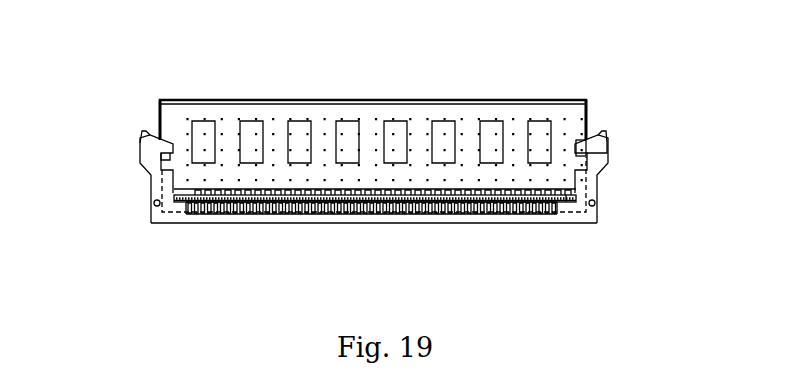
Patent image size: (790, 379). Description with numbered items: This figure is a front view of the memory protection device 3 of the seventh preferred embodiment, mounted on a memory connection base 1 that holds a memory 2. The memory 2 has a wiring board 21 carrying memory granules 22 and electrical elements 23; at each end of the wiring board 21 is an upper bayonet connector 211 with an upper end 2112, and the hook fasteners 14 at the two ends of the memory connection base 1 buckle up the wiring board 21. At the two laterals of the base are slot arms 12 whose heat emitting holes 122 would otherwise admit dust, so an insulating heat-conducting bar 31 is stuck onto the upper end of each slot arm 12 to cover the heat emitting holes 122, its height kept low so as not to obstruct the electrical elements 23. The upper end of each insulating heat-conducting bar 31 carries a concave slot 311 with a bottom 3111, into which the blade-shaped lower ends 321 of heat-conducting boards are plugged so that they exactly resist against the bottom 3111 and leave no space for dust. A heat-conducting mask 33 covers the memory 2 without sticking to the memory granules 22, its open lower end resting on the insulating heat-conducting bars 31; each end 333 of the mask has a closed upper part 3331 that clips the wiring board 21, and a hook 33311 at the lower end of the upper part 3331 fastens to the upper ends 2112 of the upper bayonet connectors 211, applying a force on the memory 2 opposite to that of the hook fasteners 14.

The memory connection base 1 is at (593, 218).
The slot arm 12 is at (561, 203).
The heat emitting hole 122 is at (572, 198).
The hook fastener 14 is at (607, 148).
The memory 2 is at (330, 117).
The wiring board 21 is at (183, 112).
The memory granules 22 is at (203, 128).
The electrical elements 23 is at (410, 196).
The upper bayonet connector 211 is at (146, 136).
The upper end of upper bayonet connector 2112 is at (166, 142).
The memory protection device 3 is at (220, 196).
The insulating heat-conducting bar 31 is at (315, 196).
The concave slot 311 is at (361, 197).
The lower end of heat-conducting board 321 is at (413, 197).
The bottom of concave slot 3111 is at (481, 197).
The heat-conducting mask 33 is at (527, 102).
The end of heat-conducting mask 333 is at (168, 118).
The upper part of mask end 3331 is at (580, 122).
The hook 33311 is at (580, 142).